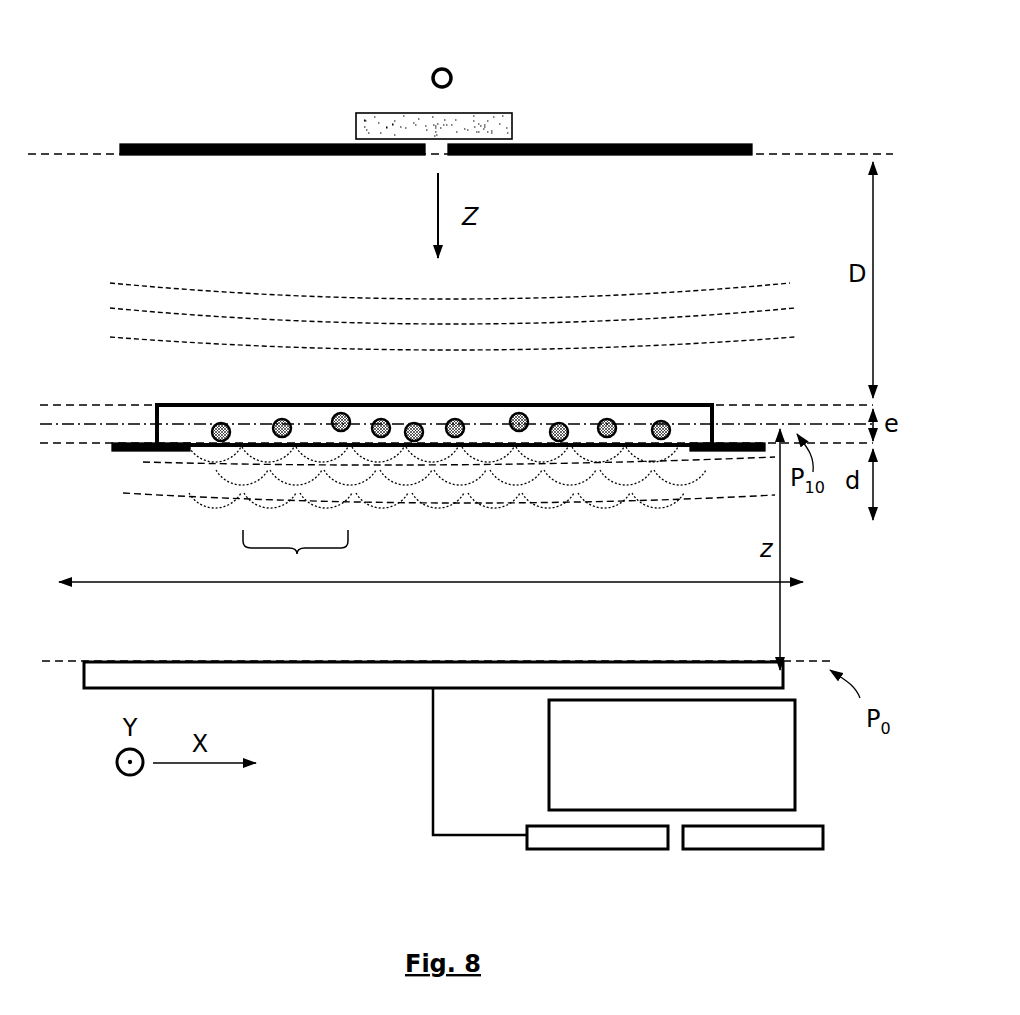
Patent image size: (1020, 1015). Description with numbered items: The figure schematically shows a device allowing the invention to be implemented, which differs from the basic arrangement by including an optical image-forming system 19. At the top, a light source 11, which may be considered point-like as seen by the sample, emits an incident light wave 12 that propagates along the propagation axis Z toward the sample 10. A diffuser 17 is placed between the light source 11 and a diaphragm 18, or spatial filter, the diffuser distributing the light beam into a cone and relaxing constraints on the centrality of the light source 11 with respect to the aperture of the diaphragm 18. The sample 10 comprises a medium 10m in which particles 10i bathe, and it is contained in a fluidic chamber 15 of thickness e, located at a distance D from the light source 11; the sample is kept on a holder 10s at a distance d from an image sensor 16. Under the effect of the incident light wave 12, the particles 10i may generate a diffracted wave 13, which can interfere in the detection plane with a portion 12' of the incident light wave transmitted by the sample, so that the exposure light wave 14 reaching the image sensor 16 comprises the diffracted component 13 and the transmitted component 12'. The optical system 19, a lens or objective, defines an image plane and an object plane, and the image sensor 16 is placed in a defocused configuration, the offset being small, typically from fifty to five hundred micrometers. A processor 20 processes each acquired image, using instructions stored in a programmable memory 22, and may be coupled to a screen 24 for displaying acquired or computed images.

The sample 10 is at (160, 422).
The particles 10i is at (325, 414).
The medium 10m is at (636, 424).
The holder 10s is at (145, 455).
The light source 11 is at (430, 75).
The incident light wave 12 is at (420, 314).
The transmitted portion of the incident light wave 12' is at (449, 501).
The diffracted wave 13 is at (340, 503).
The exposure light wave 14 is at (295, 557).
The fluidic chamber 15 is at (718, 420).
The image sensor 16 is at (483, 678).
The diffuser 17 is at (492, 130).
The diaphragm 18 is at (758, 152).
The optical image-forming system 19 is at (440, 590).
The processor 20 is at (590, 841).
The programmable memory 22 is at (727, 841).
The screen 24 is at (776, 732).